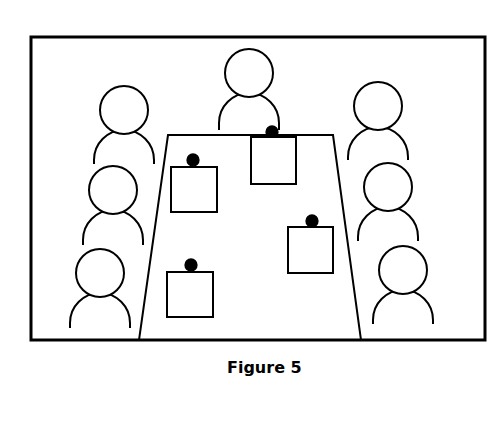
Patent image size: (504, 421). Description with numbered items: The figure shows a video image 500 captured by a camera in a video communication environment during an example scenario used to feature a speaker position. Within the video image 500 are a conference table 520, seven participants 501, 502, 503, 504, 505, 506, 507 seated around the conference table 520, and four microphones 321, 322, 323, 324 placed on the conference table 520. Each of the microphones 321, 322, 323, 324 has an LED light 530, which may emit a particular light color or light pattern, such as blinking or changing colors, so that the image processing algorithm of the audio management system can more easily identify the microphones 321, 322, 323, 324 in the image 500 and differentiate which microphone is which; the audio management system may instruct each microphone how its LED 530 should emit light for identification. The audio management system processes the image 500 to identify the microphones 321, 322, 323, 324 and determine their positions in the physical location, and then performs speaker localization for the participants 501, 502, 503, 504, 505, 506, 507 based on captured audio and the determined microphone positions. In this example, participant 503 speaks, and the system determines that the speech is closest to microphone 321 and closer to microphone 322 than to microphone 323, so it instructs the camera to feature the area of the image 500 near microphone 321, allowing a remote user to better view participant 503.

The video image 500 is at (49, 37).
The participant 501 is at (113, 326).
The participant 502 is at (126, 242).
The participant 503 is at (138, 164).
The participant 504 is at (261, 128).
The participant 505 is at (391, 160).
The participant 506 is at (401, 240).
The participant 507 is at (416, 324).
The microphone 321 is at (206, 206).
The microphone 322 is at (285, 178).
The microphone 323 is at (202, 312).
The microphone 324 is at (322, 268).
The conference table 520 is at (347, 330).
The LED light 530 is at (309, 218).